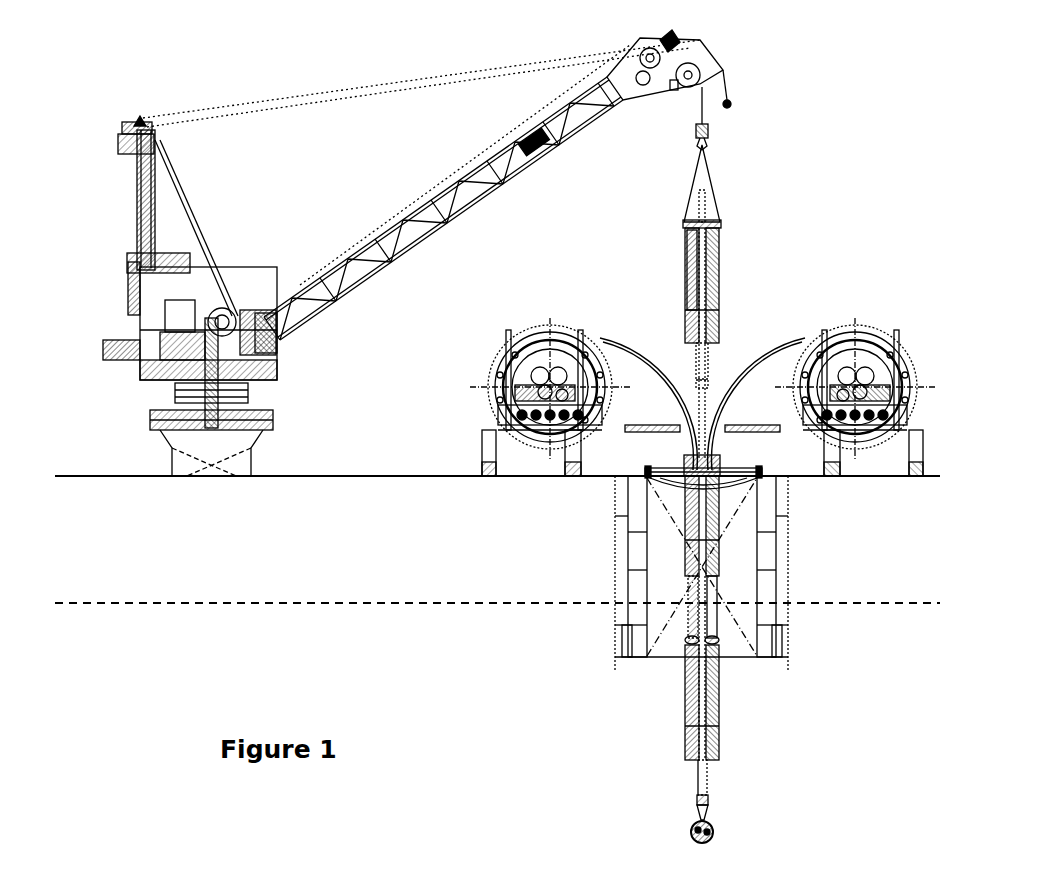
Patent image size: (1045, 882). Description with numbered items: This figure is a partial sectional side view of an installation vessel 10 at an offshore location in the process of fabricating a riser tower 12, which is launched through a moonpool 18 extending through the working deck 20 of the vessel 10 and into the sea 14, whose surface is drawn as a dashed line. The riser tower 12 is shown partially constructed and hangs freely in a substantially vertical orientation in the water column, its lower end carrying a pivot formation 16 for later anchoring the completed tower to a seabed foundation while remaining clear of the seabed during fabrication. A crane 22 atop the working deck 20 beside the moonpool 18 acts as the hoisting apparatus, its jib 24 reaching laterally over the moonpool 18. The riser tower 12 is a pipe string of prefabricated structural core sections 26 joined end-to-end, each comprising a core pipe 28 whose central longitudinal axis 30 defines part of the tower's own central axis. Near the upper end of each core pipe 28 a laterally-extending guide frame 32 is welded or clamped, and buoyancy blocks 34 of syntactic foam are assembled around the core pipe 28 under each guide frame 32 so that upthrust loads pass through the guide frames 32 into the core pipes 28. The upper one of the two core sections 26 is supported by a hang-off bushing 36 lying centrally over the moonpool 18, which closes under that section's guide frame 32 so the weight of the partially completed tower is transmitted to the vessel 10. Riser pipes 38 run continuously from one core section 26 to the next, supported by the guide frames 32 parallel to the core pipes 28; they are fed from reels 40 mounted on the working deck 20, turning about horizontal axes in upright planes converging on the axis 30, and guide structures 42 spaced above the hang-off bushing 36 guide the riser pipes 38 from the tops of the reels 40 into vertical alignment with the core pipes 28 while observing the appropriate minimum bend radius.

The installation vessel 10 is at (170, 552).
The riser tower 12 is at (636, 729).
The sea 14 is at (470, 600).
The pivot formation 16 is at (708, 828).
The moonpool 18 is at (735, 560).
The working deck 20 is at (350, 475).
The crane 22 is at (96, 257).
The jib 24 is at (540, 170).
The structural core section 26 is at (735, 250).
The core pipe 28 is at (706, 207).
The central longitudinal axis 30 is at (706, 405).
The guide frame 32 is at (688, 227).
The buoyancy blocks 34 is at (690, 285).
The hang-off bushing 36 is at (735, 471).
The riser pipes 38 is at (625, 345).
The reels 40 is at (520, 365).
The guide structures 42 is at (640, 425).